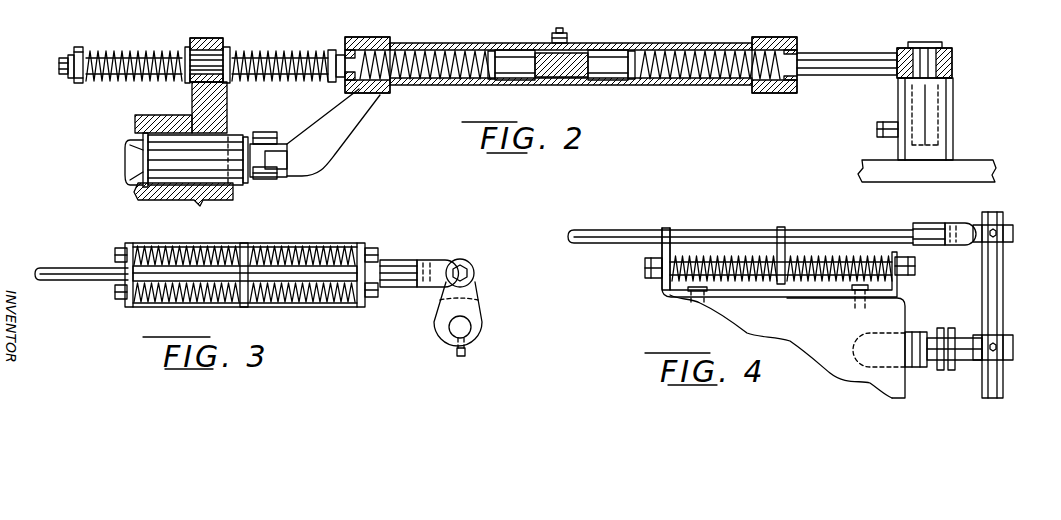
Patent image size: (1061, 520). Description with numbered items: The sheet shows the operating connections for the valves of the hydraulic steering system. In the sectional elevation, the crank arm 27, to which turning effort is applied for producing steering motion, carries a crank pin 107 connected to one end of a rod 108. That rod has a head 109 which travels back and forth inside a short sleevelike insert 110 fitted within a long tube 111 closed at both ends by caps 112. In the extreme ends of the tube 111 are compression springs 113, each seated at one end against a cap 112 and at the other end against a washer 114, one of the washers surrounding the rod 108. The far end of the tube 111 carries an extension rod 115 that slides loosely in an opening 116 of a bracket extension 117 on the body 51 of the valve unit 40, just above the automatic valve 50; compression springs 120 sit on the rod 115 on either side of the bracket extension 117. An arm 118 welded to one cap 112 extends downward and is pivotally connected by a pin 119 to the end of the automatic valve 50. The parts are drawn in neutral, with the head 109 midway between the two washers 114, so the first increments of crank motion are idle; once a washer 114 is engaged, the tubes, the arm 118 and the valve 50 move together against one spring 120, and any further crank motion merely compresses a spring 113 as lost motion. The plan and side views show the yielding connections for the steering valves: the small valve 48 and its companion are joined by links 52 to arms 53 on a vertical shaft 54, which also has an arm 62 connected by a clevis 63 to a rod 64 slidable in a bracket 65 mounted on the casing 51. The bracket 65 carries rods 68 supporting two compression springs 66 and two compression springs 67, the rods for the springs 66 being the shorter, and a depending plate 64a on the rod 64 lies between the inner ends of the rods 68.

In FIG. 2, the extension rod 115 is at (58, 67).
In FIG. 2, the compression springs 120 is at (124, 50).
In FIG. 2, the opening 116 is at (203, 38).
In FIG. 2, the bracket extension 117 is at (227, 103).
In FIG. 2, the housing or body 51 is at (135, 126).
In FIG. 4, the housing or body 51 is at (846, 348).
In FIG. 2, the automatic valve 50 is at (240, 180).
In FIG. 2, the pin 119 is at (268, 132).
In FIG. 2, the arm 118 is at (348, 131).
In FIG. 2, the caps 112 is at (362, 37).
In FIG. 2, the compression springs 113 is at (432, 52).
In FIG. 2, the washer 114 is at (489, 81).
In FIG. 2, the long tube 111 is at (506, 48).
In FIG. 2, the head 109 is at (560, 78).
In FIG. 2, the sleevelike insert 110 is at (606, 49).
In FIG. 2, the rod 108 is at (856, 54).
In FIG. 2, the crank pin 107 is at (929, 43).
In FIG. 2, the crank arm 27 is at (976, 160).
In FIG. 3, the rod 64 is at (62, 270).
In FIG. 4, the rod 64 is at (859, 231).
In FIG. 3, the depending arm or plate 64a is at (245, 244).
In FIG. 4, the depending arm or plate 64a is at (787, 221).
In FIG. 3, the bracket 65 is at (128, 304).
In FIG. 4, the bracket 65 is at (667, 229).
In FIG. 3, the compression springs 66 is at (217, 302).
In FIG. 4, the compression springs 66 is at (680, 275).
In FIG. 3, the compression springs 67 is at (181, 239).
In FIG. 3, the rods 68 is at (114, 291).
In FIG. 4, the rods 68 is at (643, 268).
In FIG. 3, the clevis 63 is at (434, 260).
In FIG. 4, the clevis 63 is at (960, 223).
In FIG. 3, the arm 62 is at (479, 302).
In FIG. 4, the arm 62 is at (1014, 230).
In FIG. 3, the vertical shaft 54 is at (462, 326).
In FIG. 4, the vertical shaft 54 is at (1004, 282).
In FIG. 4, the valve unit 40 is at (746, 323).
In FIG. 4, the links 52 is at (962, 336).
In FIG. 4, the arms 53 is at (1014, 344).
In FIG. 4, the small valve 48 is at (921, 364).